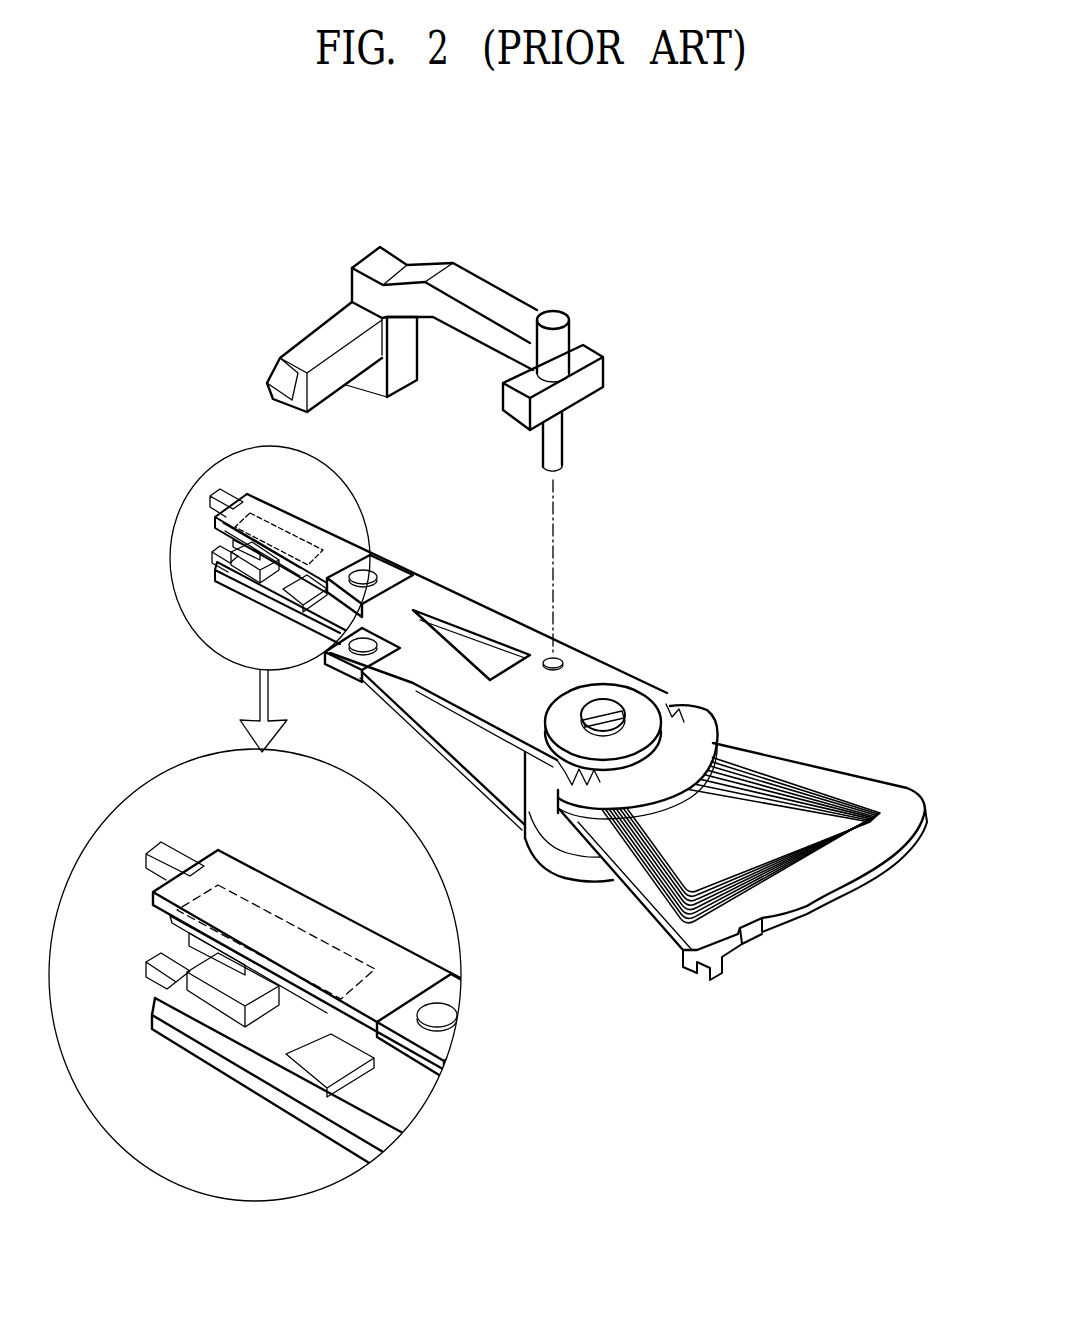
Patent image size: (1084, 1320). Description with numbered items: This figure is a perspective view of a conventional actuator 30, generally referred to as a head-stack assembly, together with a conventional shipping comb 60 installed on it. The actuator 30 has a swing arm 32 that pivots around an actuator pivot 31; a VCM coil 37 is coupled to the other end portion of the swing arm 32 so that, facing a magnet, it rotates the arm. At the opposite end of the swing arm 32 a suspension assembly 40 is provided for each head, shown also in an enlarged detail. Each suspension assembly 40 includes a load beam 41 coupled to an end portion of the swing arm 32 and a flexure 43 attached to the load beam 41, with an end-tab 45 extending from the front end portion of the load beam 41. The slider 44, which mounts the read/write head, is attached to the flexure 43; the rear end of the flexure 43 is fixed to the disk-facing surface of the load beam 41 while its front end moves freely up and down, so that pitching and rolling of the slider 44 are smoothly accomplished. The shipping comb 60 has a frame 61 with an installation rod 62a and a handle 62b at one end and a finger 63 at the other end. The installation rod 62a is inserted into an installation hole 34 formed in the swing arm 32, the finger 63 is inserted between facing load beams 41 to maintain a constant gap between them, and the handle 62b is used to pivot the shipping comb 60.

The actuator 30 is at (587, 730).
The actuator pivot 31 is at (607, 703).
The swing arm 32 is at (502, 807).
The installation hole 34 is at (558, 655).
The VCM coil 37 is at (798, 795).
The suspension assembly 40 is at (297, 986).
The load beam 41 is at (363, 938).
The flexure 43 is at (170, 916).
The slider 44 is at (226, 986).
The end-tab 45 is at (175, 851).
The shipping comb 60 is at (461, 352).
The frame 61 is at (507, 308).
The installation rod 62a is at (562, 440).
The handle 62b is at (562, 343).
The finger 63 is at (328, 328).